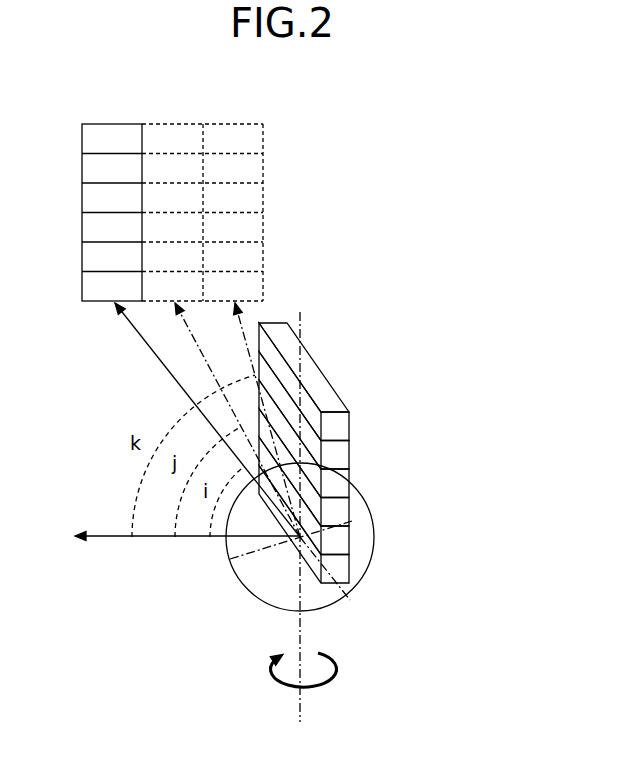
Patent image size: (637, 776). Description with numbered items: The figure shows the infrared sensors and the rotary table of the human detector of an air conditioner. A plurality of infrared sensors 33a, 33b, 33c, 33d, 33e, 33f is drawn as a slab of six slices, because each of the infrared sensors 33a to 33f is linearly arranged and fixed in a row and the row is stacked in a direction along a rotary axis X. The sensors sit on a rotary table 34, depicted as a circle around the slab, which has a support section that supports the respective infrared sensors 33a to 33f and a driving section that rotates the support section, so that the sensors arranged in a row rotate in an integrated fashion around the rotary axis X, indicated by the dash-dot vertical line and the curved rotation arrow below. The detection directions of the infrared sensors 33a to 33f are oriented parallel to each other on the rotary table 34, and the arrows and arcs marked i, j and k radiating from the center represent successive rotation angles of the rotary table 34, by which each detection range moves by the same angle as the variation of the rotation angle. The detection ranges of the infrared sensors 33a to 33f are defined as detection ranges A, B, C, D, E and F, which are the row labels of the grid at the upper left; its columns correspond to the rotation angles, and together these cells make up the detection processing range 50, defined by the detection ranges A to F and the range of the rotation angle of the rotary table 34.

The detection processing range 50 is at (85, 303).
The infrared sensor 33a is at (350, 426).
The infrared sensor 33b is at (350, 454).
The infrared sensor 33c is at (350, 483).
The infrared sensor 33d is at (350, 512).
The infrared sensor 33e is at (350, 540).
The infrared sensor 33f is at (350, 568).
The rotary table 34 is at (244, 586).
The rotary axis X is at (302, 628).